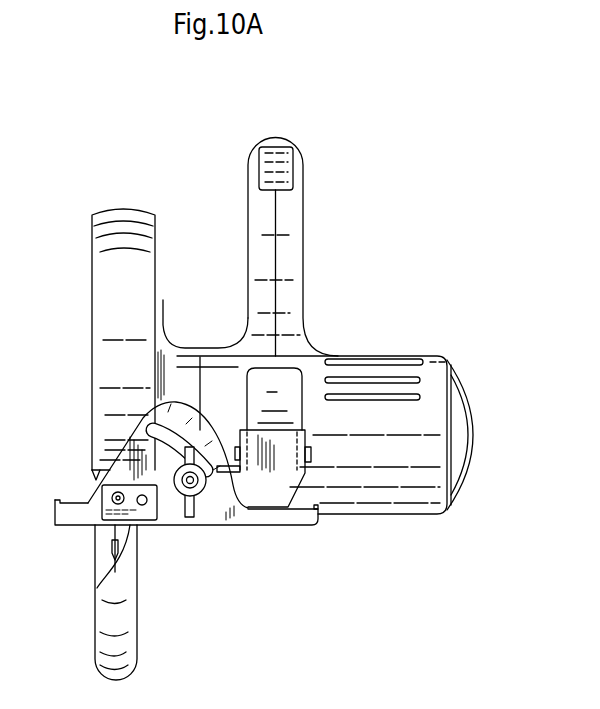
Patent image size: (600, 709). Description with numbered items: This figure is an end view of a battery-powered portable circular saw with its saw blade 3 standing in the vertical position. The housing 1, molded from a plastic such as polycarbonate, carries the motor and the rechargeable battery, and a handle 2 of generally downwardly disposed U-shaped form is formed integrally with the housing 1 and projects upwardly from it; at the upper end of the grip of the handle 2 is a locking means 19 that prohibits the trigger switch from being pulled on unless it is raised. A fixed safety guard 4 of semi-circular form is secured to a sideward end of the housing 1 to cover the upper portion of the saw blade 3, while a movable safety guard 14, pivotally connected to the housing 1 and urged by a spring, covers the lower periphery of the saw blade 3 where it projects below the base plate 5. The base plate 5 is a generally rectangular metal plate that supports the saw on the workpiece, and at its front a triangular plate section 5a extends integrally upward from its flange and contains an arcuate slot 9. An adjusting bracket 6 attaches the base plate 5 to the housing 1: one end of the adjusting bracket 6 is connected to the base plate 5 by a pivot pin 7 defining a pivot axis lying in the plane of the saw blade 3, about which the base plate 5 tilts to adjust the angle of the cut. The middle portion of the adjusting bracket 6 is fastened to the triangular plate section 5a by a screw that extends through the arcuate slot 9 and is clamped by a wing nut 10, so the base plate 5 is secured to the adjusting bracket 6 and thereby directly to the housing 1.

The housing 1 is at (398, 357).
The handle 2 is at (288, 233).
The circular saw blade 3 is at (113, 561).
The fixed safety guard 4 is at (103, 263).
The base plate 5 is at (305, 515).
The triangular plate section 5a is at (157, 410).
The adjusting bracket 6 is at (274, 482).
The pivot pin 7 is at (112, 497).
The arcuate slot 9 is at (158, 440).
The wing nut 10 is at (192, 518).
The movable safety guard 14 is at (107, 623).
The locking means 19 is at (278, 172).